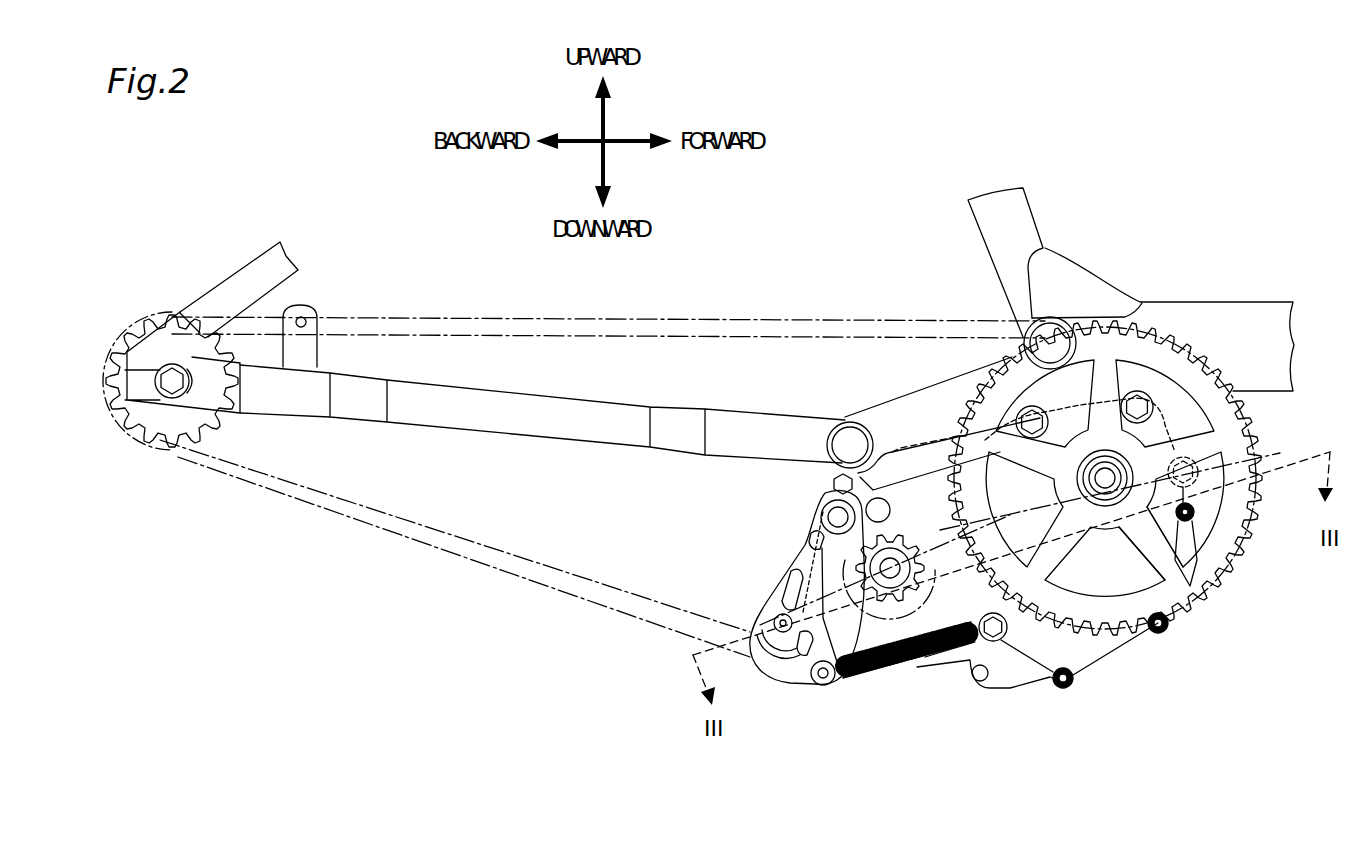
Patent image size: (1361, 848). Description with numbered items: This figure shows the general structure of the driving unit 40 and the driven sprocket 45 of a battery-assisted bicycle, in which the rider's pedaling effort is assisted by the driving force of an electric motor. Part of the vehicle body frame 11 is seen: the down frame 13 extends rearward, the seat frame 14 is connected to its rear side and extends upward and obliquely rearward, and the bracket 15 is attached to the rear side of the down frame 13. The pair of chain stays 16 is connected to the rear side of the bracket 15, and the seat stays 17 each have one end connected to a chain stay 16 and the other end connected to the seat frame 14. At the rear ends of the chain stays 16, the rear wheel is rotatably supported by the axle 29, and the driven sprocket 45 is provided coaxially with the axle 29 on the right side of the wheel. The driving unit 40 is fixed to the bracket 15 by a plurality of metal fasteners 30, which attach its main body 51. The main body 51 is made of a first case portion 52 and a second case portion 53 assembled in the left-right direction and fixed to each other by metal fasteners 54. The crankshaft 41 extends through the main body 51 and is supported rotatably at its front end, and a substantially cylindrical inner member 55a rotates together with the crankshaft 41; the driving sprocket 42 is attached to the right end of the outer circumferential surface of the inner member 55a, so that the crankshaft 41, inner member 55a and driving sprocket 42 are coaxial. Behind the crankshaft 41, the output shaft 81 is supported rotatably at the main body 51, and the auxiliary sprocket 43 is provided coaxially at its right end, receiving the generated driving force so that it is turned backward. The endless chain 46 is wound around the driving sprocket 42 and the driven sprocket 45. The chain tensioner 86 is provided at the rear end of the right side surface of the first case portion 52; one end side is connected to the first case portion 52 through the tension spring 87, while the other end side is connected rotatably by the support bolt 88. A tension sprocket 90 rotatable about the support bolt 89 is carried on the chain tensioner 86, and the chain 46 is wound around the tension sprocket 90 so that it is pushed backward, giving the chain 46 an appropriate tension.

The vehicle body frame 11 is at (960, 214).
The down frame 13 is at (1237, 302).
The seat frame 14 is at (1023, 232).
The bracket 15 is at (908, 410).
The chain stays 16 is at (750, 420).
The seat stays 17 is at (252, 275).
The axle 29 is at (172, 398).
The metal fasteners 30 is at (1043, 412).
The driving unit 40 is at (1240, 618).
The crankshaft 41 is at (1112, 515).
The driving sprocket 42 is at (1072, 532).
The auxiliary sprocket 43 is at (920, 598).
The driven sprocket 45 is at (150, 415).
The chain 46 is at (753, 318).
The main body 51 is at (1020, 694).
The first case portion 52 is at (942, 487).
The second case portion 53 is at (912, 470).
The metal fasteners 54 is at (1195, 516).
The inner member 55a is at (1084, 469).
The output shaft 81 is at (888, 582).
The chain tensioner 86 is at (870, 705).
The tension spring 87 is at (920, 668).
The support bolt 88 is at (836, 517).
The support bolt 89 is at (787, 640).
The tension sprocket 90 is at (763, 602).